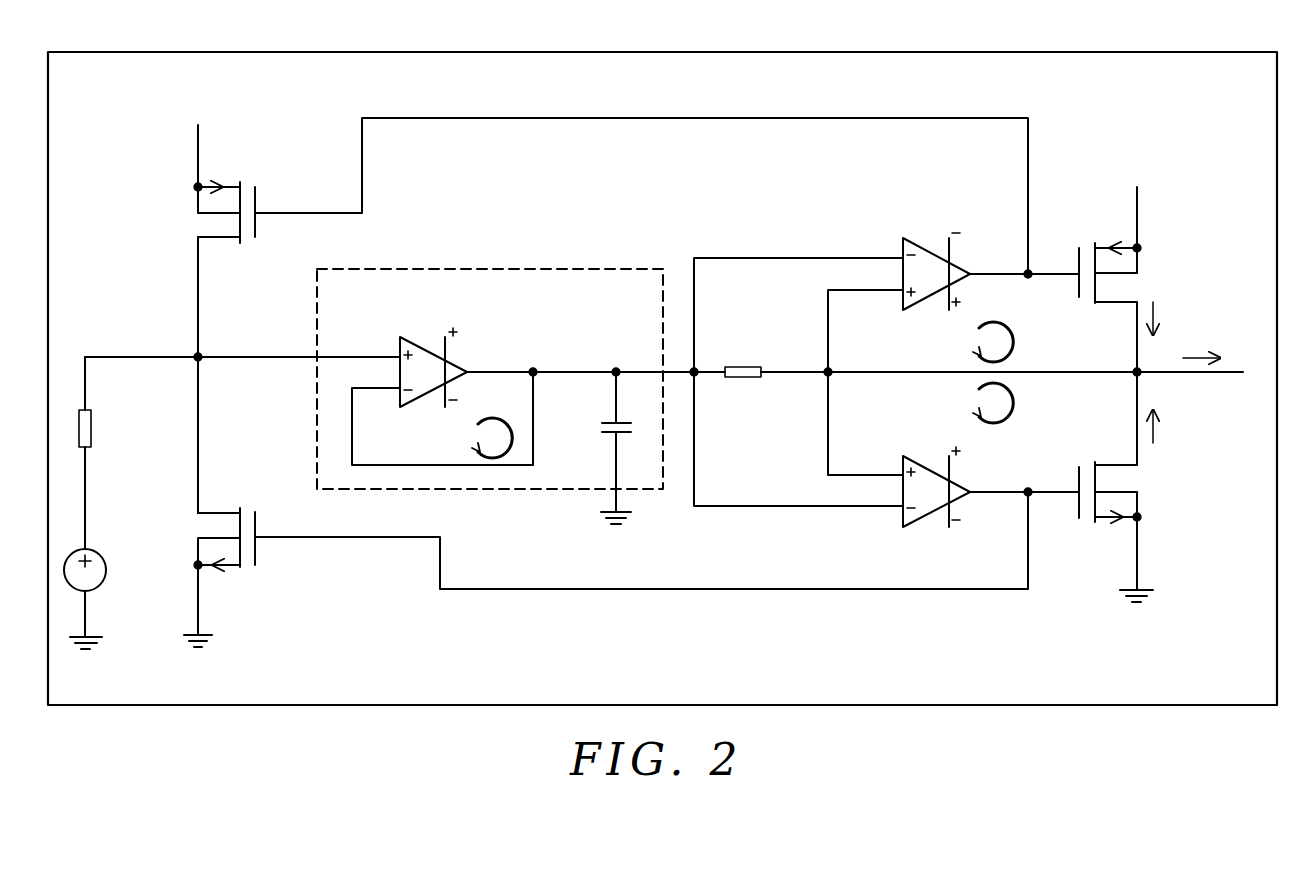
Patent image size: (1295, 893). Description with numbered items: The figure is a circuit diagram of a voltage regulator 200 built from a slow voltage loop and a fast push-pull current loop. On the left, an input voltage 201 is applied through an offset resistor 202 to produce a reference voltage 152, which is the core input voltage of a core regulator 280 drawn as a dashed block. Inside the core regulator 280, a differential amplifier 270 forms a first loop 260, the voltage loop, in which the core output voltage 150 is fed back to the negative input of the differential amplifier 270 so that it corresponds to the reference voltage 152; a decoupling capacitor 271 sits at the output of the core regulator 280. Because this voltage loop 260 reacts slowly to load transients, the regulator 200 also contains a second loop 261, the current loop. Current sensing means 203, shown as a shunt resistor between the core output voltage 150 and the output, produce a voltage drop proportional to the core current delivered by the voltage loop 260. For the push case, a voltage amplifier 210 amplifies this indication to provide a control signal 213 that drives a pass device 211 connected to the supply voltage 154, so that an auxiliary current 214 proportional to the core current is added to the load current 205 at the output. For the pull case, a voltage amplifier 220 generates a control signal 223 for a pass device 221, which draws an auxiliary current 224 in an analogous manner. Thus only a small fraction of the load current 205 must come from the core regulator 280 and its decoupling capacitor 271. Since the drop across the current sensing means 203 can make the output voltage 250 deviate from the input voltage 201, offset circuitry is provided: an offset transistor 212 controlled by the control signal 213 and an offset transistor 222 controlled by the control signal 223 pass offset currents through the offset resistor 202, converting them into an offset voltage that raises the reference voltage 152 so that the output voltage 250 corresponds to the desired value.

The regulator 200 is at (122, 722).
The supply voltage 154 is at (215, 97).
The reference voltage 152 is at (278, 359).
The core output voltage 150 is at (562, 374).
The input voltage 201 is at (107, 556).
The offset resistor 202 is at (92, 430).
The current sensing means 203 is at (738, 378).
The load current 205 is at (1200, 350).
The voltage amplifier 210 is at (914, 237).
The pass device 211 is at (1085, 240).
The offset transistor 212 is at (249, 180).
The control signal 213 is at (1028, 278).
The auxiliary current 214 is at (1155, 313).
The voltage amplifier 220 is at (914, 455).
The pass device 221 is at (1085, 458).
The offset transistor 222 is at (250, 505).
The control signal 223 is at (1028, 488).
The auxiliary current 224 is at (1155, 430).
The output voltage 250 is at (1203, 373).
The first loop 260 is at (492, 418).
The second loop 261 is at (973, 346).
The differential amplifier 270 is at (410, 335).
The decoupling capacitor 271 is at (596, 428).
The core regulator 280 is at (548, 269).